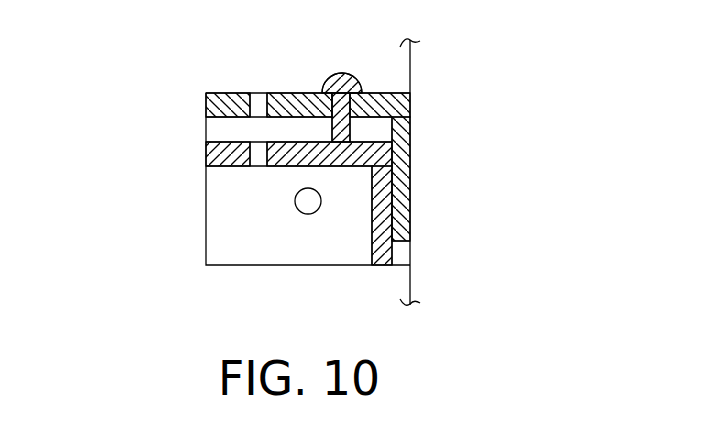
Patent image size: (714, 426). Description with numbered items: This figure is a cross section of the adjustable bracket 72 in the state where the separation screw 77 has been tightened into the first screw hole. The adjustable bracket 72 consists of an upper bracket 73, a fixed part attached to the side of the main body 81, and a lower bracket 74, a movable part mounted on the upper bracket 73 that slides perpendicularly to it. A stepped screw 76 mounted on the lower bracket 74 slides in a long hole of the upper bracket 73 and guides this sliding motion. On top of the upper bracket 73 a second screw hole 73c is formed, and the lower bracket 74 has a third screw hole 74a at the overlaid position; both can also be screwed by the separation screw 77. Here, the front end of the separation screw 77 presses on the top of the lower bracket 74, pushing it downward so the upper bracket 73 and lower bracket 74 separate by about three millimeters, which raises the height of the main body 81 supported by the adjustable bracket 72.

The adjustable bracket 72 is at (115, 105).
The upper bracket 73 is at (206, 100).
The second screw hole 73c is at (254, 95).
The lower bracket 74 is at (206, 156).
The third screw hole 74a is at (255, 166).
The stepped screw 76 is at (295, 203).
The separation screw 77 is at (340, 70).
The main body 81 is at (408, 70).